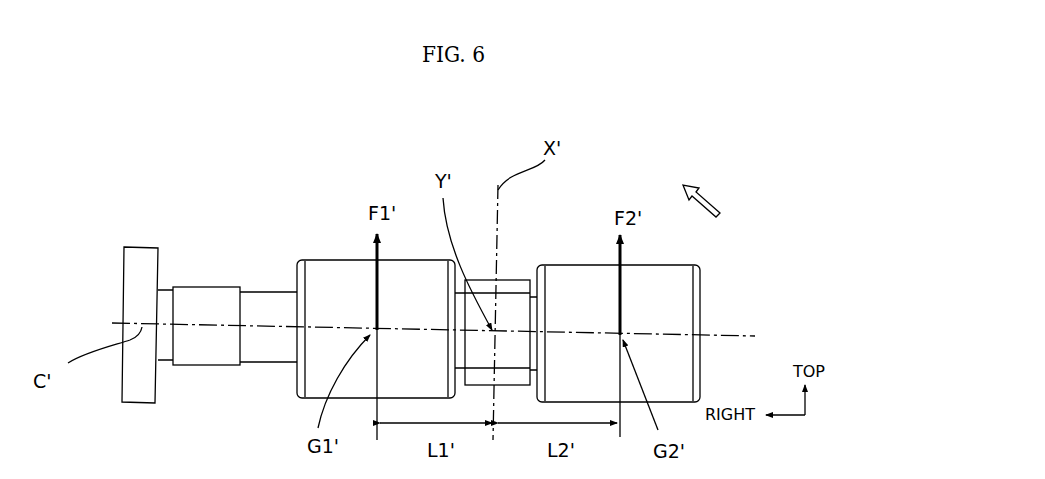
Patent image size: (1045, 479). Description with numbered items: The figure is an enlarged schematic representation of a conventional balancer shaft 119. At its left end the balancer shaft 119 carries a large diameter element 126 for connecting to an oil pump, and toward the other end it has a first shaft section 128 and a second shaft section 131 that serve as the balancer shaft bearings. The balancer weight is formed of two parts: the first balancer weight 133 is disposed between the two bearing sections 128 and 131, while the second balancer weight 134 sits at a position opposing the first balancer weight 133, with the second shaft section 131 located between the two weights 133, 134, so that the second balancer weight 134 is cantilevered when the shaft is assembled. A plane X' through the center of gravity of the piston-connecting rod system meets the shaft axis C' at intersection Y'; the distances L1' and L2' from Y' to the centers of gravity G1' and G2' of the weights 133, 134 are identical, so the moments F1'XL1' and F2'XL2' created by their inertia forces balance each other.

The balancer shaft 119 is at (770, 122).
The large diameter element 126 is at (147, 247).
The first shaft section 128 is at (207, 295).
The second shaft section 131 is at (508, 302).
The first balancer weight 133 is at (334, 270).
The second balancer weight 134 is at (683, 293).